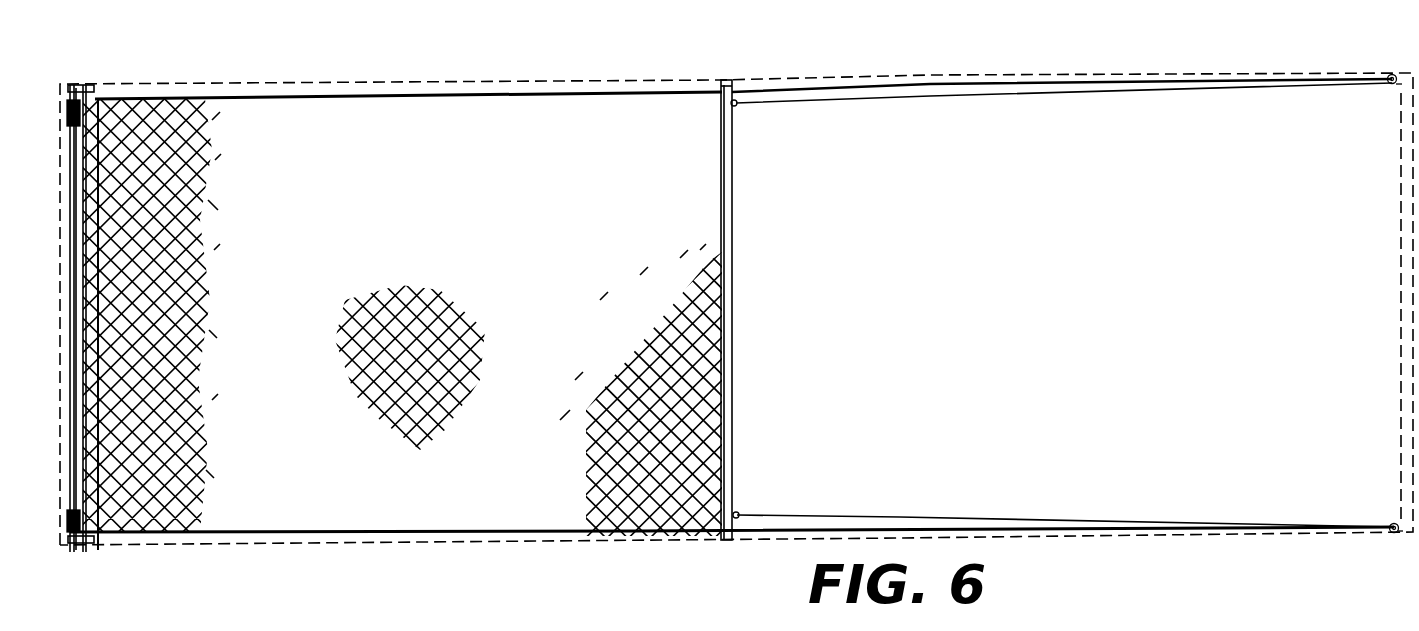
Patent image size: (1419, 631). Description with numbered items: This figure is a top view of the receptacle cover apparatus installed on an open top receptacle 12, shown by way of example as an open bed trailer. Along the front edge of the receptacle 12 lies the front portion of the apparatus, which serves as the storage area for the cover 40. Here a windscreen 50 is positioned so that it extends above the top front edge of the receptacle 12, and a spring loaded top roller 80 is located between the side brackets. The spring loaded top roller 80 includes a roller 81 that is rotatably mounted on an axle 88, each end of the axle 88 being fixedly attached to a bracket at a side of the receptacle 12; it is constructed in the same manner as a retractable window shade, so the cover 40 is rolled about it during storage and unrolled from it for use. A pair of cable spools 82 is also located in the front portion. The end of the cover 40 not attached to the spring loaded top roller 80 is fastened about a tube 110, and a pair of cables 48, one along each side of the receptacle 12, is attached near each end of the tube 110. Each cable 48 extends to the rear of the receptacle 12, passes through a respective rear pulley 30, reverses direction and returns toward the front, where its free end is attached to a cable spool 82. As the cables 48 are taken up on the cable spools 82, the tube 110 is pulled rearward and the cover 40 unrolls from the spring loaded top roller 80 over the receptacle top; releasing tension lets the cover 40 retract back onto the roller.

The open top receptacle 12 is at (736, 323).
The rear pulley 30 is at (1392, 74).
The cover 40 is at (582, 153).
The cable 48 is at (893, 83).
The windscreen 50 is at (60, 547).
The spring loaded top roller 80 is at (100, 97).
The roller 81 is at (110, 545).
The cable spool 82 is at (72, 98).
The axle 88 is at (90, 87).
The tube 110 is at (77, 87).